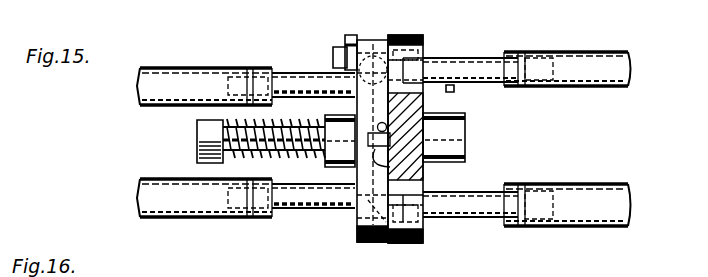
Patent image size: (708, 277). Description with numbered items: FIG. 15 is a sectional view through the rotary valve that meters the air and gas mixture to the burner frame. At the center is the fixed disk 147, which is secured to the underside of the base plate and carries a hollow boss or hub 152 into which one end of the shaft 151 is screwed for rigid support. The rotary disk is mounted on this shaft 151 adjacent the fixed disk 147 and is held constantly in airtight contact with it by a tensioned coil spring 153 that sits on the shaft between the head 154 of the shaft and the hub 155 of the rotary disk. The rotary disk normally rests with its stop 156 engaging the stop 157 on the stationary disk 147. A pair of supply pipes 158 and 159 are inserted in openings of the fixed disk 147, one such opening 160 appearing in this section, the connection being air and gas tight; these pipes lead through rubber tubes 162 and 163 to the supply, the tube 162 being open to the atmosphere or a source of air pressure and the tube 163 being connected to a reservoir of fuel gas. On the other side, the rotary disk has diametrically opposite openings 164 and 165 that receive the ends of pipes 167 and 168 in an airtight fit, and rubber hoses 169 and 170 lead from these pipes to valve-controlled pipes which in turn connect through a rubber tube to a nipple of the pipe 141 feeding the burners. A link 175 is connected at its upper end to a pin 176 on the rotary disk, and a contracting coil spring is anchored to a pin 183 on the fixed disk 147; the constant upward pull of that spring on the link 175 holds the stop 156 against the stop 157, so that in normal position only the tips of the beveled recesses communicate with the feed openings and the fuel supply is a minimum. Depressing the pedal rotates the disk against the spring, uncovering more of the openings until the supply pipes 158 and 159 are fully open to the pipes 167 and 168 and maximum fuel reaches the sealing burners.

The pipe 141 is at (398, 246).
The disk 147 is at (424, 247).
The shaft 151 is at (238, 157).
The hollow boss or hub 152 is at (457, 155).
The tensioned coil spring 153 is at (252, 126).
The head of shaft 154 is at (197, 128).
The hub of disk 155 is at (337, 168).
The stop 156 is at (378, 124).
The stop 157 is at (425, 173).
The pipe 158 is at (478, 64).
The pipe 159 is at (460, 210).
The opening 160 is at (403, 36).
The rubber tube 162 is at (583, 68).
The rubber tube 163 is at (590, 200).
The opening 164 is at (371, 56).
The opening 165 is at (376, 243).
The pipe 167 is at (287, 82).
The pipe 168 is at (283, 206).
The rubber hose 169 is at (178, 75).
The rubber hose 170 is at (181, 202).
The link 175 is at (348, 34).
The pin 176 is at (339, 46).
The pin 183 is at (456, 91).